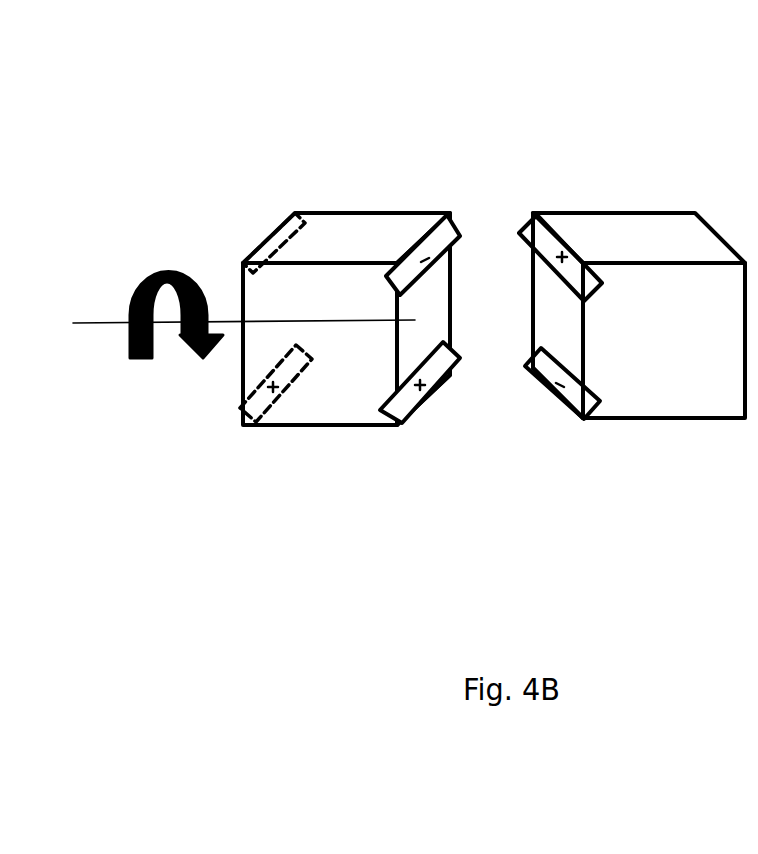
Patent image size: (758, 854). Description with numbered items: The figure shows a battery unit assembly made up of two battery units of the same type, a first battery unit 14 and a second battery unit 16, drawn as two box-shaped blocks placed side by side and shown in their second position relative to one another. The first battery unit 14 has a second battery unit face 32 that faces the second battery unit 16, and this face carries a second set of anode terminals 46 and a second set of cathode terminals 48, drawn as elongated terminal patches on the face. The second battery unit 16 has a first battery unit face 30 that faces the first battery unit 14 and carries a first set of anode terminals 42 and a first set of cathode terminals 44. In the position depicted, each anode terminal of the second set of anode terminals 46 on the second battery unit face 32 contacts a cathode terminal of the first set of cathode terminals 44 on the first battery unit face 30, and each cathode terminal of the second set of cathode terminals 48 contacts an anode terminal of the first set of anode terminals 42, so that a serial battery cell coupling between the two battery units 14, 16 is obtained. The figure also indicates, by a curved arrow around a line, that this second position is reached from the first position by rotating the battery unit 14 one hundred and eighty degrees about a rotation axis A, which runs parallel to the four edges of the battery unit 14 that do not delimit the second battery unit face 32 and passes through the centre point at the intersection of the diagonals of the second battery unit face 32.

The battery unit 14 is at (360, 173).
The second battery unit 16 is at (599, 168).
The first battery unit face 30 is at (570, 338).
The second battery unit face 32 is at (411, 354).
The first set of anode terminals 42 is at (282, 408).
The first set of cathode terminals 44 is at (258, 212).
The second set of anode terminals 46 is at (421, 392).
The second set of cathode terminals 48 is at (441, 199).
The rotation axis A is at (65, 312).